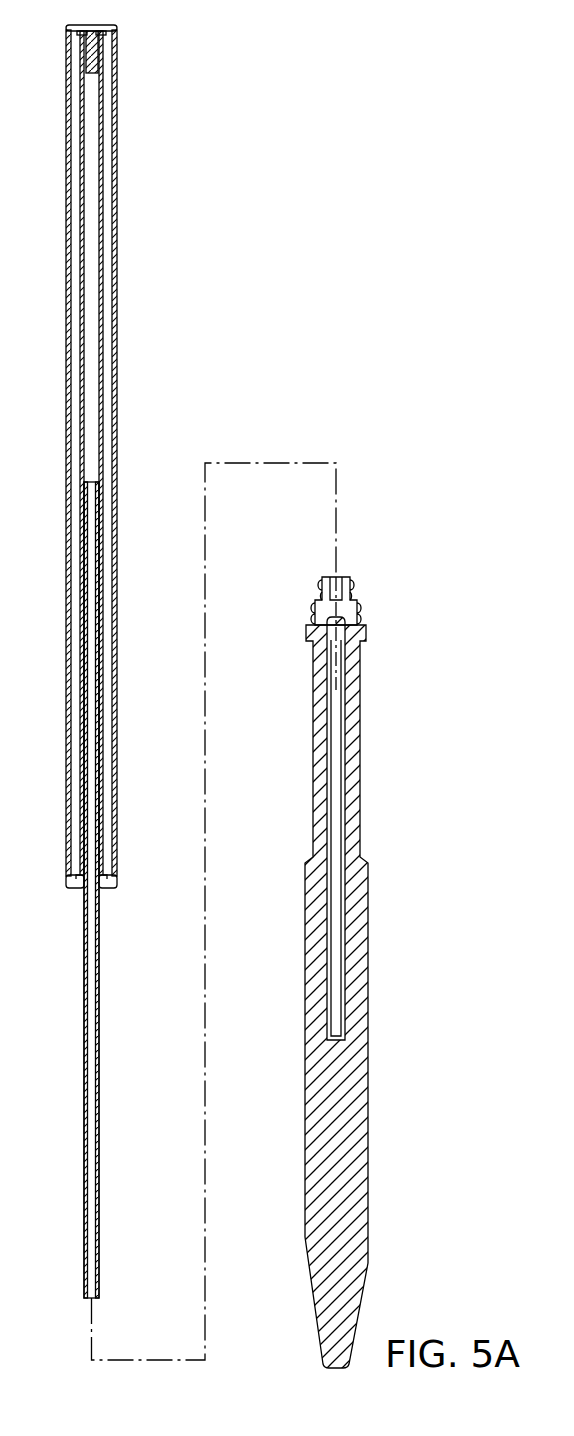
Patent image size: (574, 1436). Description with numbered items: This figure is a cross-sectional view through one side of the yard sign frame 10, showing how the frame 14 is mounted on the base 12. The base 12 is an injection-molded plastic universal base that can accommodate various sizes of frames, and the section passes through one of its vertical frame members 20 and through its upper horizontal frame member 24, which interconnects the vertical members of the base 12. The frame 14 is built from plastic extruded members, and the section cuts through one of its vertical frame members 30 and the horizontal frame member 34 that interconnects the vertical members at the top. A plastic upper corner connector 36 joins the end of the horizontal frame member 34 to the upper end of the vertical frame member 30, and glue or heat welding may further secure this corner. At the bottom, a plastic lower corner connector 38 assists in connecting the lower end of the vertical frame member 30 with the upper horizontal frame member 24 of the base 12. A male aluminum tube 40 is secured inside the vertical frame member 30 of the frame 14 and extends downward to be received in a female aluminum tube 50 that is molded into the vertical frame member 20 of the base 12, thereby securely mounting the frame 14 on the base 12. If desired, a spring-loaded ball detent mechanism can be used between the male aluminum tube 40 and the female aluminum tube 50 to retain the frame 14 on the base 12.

The yard sign frame 10 is at (333, 298).
The base 12 is at (349, 951).
The frame 14 is at (113, 649).
The vertical frame member 20 is at (305, 1080).
The horizontal frame member 24 is at (347, 578).
The vertical frame member 30 is at (118, 444).
The horizontal frame member 34 is at (105, 25).
The upper corner connector 36 is at (90, 61).
The lower corner connector 38 is at (100, 857).
The male aluminum tube 40 is at (83, 975).
The female aluminum tube 50 is at (335, 746).